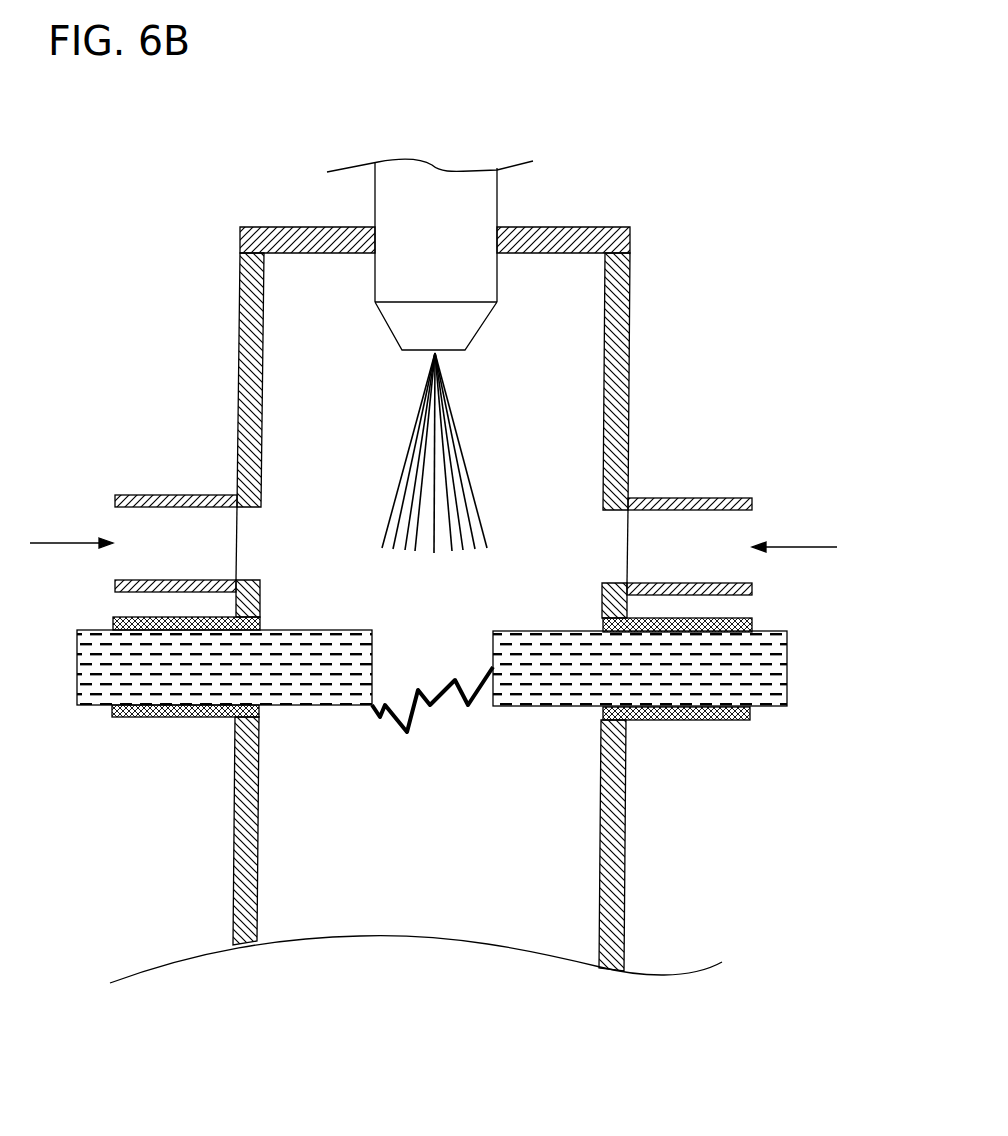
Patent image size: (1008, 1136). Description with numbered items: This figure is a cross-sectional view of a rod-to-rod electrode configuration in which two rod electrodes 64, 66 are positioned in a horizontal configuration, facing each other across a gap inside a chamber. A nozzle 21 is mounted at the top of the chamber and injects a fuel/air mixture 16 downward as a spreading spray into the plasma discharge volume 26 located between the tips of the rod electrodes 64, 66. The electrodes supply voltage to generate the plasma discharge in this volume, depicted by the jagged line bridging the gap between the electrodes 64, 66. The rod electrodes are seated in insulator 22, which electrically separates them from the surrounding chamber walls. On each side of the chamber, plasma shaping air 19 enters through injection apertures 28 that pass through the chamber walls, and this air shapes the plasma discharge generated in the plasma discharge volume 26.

The nozzle 21 is at (425, 327).
The fuel/air mixture 16 is at (462, 472).
The plasma shaping air 19 is at (433, 528).
The injection apertures 28 is at (140, 542).
The insulator 22 is at (670, 718).
The rod electrode 64 is at (98, 675).
The rod electrode 66 is at (747, 680).
The plasma discharge volume 26 is at (432, 607).